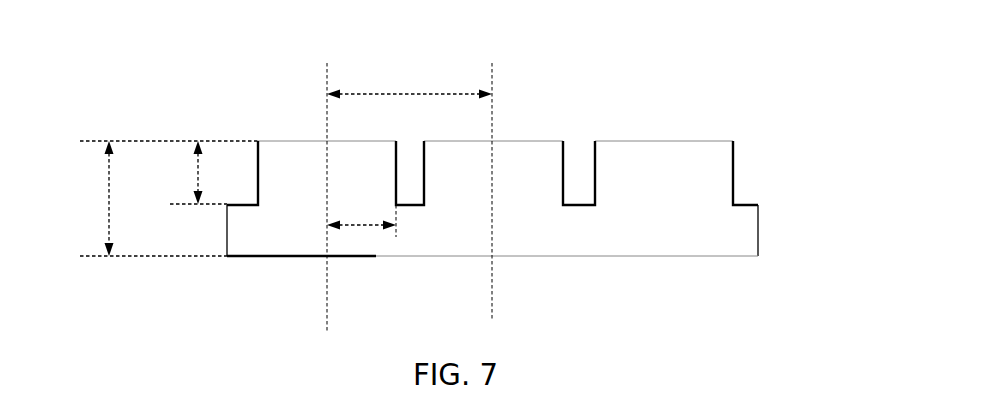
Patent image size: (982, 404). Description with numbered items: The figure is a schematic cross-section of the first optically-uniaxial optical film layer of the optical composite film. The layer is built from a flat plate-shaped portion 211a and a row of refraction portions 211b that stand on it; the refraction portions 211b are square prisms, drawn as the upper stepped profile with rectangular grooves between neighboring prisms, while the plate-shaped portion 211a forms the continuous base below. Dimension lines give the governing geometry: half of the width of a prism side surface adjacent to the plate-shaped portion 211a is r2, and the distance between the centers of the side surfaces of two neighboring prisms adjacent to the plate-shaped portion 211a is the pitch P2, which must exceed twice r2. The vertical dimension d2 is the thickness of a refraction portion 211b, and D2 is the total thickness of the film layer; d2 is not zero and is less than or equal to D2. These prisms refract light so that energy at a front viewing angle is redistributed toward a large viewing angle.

The refraction portion 211b is at (705, 171).
The plate-shaped portion 211a is at (705, 230).
The thickness of the first optically-uniaxial optical film layer D2 is at (153, 198).
The thickness of the refraction portion d2 is at (191, 172).
The distance between centers of side surfaces of two neighboring prism portions P2 is at (409, 191).
The half of the width of a side surface of the refraction portion r2 is at (361, 212).